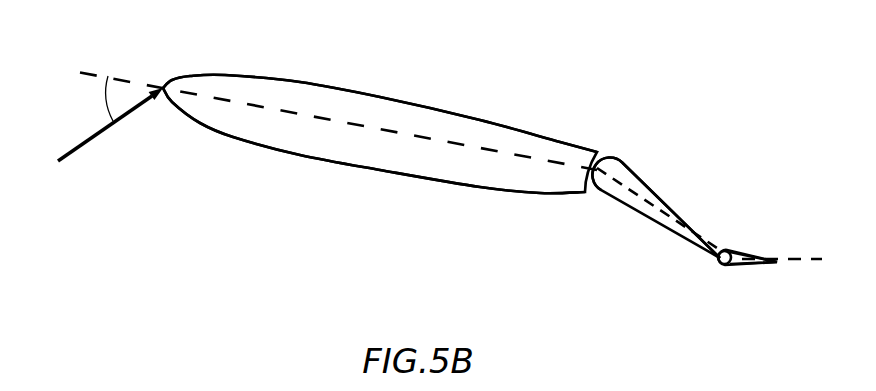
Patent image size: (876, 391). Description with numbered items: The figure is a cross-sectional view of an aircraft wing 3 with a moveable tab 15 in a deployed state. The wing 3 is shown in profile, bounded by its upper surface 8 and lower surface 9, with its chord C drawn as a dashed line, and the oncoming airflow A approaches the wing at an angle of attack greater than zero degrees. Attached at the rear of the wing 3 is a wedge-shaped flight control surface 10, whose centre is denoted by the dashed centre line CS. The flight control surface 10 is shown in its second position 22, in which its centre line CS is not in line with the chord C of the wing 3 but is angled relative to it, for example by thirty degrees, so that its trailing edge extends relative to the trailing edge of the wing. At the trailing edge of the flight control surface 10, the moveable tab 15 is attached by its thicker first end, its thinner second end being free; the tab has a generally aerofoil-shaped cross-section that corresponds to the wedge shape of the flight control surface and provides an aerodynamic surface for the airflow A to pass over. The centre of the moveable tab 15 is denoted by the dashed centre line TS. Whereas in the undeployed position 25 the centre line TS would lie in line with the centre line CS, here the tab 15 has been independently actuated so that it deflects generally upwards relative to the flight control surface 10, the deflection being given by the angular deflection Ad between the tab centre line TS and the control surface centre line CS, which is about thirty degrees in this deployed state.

The wing 3 is at (219, 78).
The upper (suction) surface 8 is at (327, 82).
The lower (pressure) surface 9 is at (326, 153).
The flight control surface 10 is at (623, 197).
The moveable tab 15 is at (727, 268).
The second position 22 is at (699, 180).
The first, undeployed position 25 is at (752, 271).
The oncoming airflow A is at (87, 141).
The chord C is at (400, 128).
The centre line of flight control surface CS is at (623, 182).
The angular deflection Ad is at (727, 232).
The centre line of moveable tab TS is at (793, 257).